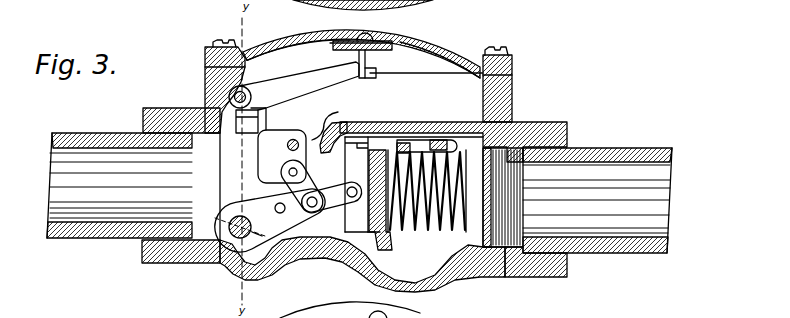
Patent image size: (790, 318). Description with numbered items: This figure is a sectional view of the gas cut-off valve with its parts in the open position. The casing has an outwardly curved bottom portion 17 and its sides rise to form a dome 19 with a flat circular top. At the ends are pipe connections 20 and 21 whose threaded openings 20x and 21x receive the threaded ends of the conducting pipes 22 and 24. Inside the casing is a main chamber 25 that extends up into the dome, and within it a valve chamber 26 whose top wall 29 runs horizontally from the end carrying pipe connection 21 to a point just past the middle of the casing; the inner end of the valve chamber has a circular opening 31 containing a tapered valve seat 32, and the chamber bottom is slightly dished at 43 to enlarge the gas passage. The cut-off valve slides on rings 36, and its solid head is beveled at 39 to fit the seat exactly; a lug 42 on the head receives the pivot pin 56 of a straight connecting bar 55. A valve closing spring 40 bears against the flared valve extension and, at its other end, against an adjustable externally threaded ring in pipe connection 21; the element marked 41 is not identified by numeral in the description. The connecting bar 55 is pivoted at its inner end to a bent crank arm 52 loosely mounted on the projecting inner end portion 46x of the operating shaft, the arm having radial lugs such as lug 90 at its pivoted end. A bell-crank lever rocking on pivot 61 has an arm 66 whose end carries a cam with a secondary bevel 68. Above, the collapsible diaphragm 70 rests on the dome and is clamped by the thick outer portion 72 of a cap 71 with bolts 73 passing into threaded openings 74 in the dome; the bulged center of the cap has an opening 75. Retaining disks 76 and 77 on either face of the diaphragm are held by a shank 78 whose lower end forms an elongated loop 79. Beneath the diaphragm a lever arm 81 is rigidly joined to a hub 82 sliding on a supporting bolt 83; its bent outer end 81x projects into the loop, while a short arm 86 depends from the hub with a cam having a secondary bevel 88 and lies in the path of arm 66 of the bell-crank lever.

The bottom portion 17 is at (312, 262).
The dome 19 is at (513, 98).
The pipe connection 20 is at (187, 110).
The threaded opening 20x is at (143, 242).
The pipe connection 21 is at (551, 118).
The threaded opening 21x is at (568, 145).
The conducting pipe 22 is at (120, 137).
The conducting pipe 24 is at (626, 148).
The main chamber 25 is at (378, 122).
The valve chamber 26 is at (424, 258).
The top wall 29 is at (360, 37).
The circular opening 31 is at (316, 136).
The valve seat 32 is at (343, 127).
The rings 36 is at (440, 148).
The beveled surface 39 is at (369, 243).
The valve closing spring 40 is at (405, 120).
The body end block 41 is at (488, 267).
The lug 42 is at (356, 184).
The dished bottom 43 is at (383, 277).
The inner end portion of shaft 46x is at (233, 238).
The crank arm 52 is at (298, 192).
The connecting bar 55 is at (333, 200).
The pivot pin 56 is at (356, 221).
The pivot 61 is at (293, 133).
The arm of bell-crank lever 66 is at (262, 136).
The secondary bevel 68 is at (263, 136).
The collapsible diaphragm 70 is at (447, 45).
The cap 71 is at (448, 54).
The outer portion of cap 72 is at (513, 62).
The bolts 73 is at (220, 40).
The threaded openings 74 is at (397, 315).
The opening 75 is at (398, 40).
The upper retaining disk 76 is at (355, 42).
The lower retaining disk 77 is at (368, 56).
The shank 78 is at (330, 36).
The elongated loop 79 is at (360, 78).
The lever arm 81 is at (297, 82).
The outer end portion of arm 81x is at (369, 76).
The hub 82 is at (228, 98).
The supporting bolt 83 is at (207, 80).
The short arm 86 is at (236, 117).
The secondary bevel 88 is at (243, 134).
The lug 90 is at (251, 234).